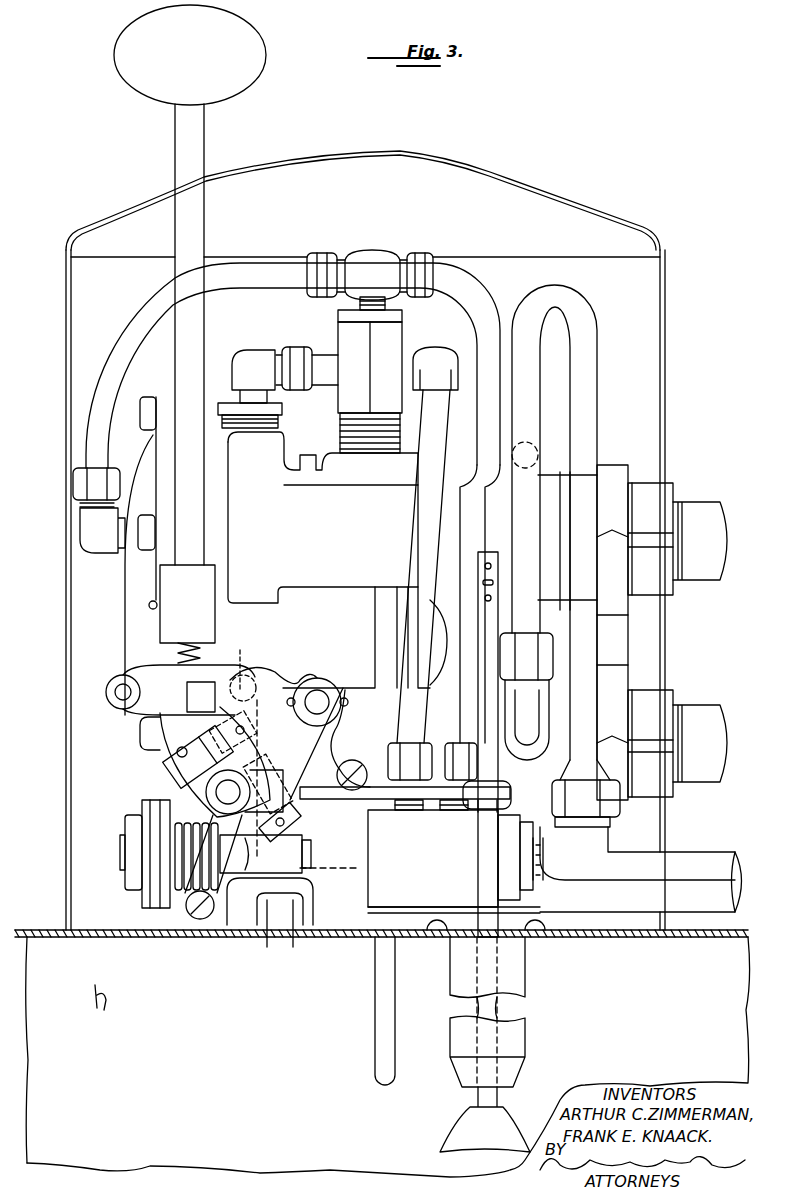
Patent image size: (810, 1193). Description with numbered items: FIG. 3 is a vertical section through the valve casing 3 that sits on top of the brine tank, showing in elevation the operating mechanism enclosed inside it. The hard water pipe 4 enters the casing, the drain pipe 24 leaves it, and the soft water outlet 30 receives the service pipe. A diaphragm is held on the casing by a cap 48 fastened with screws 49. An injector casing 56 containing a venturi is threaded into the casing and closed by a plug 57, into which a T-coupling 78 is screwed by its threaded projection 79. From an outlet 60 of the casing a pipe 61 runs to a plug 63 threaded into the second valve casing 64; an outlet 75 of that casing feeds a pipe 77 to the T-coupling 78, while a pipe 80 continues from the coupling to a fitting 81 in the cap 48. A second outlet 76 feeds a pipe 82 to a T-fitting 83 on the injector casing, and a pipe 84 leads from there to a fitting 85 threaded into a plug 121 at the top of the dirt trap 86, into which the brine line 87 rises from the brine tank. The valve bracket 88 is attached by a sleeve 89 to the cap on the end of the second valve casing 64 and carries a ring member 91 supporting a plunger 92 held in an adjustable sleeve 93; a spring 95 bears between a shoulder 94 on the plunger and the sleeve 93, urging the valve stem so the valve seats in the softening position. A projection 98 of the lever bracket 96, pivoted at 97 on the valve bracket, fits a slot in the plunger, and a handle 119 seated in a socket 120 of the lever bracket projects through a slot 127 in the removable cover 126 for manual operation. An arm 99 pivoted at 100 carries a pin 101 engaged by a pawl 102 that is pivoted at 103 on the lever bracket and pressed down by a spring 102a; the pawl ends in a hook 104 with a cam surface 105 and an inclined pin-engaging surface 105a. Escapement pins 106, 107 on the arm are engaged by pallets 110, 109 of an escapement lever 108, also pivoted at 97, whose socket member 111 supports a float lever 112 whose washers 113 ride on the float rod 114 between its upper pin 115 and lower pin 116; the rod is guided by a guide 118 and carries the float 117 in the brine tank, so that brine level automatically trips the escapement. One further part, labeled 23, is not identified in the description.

The valve casing 3 is at (666, 368).
The hard water pipe 4 is at (704, 698).
The bolt 23 is at (300, 945).
The drain pipe 24 is at (712, 862).
The outlet 30 is at (700, 508).
The cap 48 is at (125, 630).
The screws 49 is at (148, 425).
The injector casing 56 is at (352, 345).
The plug 57 is at (338, 316).
The outlet 60 is at (560, 755).
The pipe 61 is at (575, 422).
The plug 63 is at (525, 890).
The second valve casing 64 is at (437, 868).
The outlet 75 is at (454, 861).
The outlet 76 is at (405, 806).
The pipe 77 is at (462, 720).
The T-coupling 78 is at (373, 268).
The threaded projection 79 is at (388, 305).
The pipe 80 is at (125, 340).
The fitting 81 is at (85, 528).
The pipe 82 is at (418, 560).
The T-fitting 83 is at (438, 352).
The pipe 84 is at (320, 385).
The fitting 85 is at (252, 356).
The dirt trap 86 is at (257, 478).
The brine line 87 is at (372, 635).
The valve bracket 88 is at (342, 733).
The sleeve 89 is at (345, 878).
The ring member 91 is at (160, 898).
The plunger 92 is at (303, 858).
The sleeve 93 is at (135, 872).
The shoulder 94 is at (250, 925).
The spring 95 is at (198, 920).
The lever bracket 96 is at (165, 767).
The pivot 97 is at (226, 780).
The projection 98 is at (270, 901).
The arm 99 is at (300, 685).
The pivot 100 is at (320, 692).
The pin 101 is at (247, 675).
The pawl 102 is at (158, 697).
The spring 102a is at (175, 620).
The pivot 103 is at (106, 692).
The hook 104 is at (201, 698).
The cam surface 105 is at (248, 660).
The inclined cam surface 105a is at (199, 659).
The escapement pin 106 is at (272, 775).
The escapement pin 107 is at (250, 742).
The escapement lever 108 is at (195, 780).
The pallet 109 is at (140, 730).
The pallet 110 is at (298, 822).
The socket member 111 is at (345, 770).
The float lever 112 is at (428, 808).
The washers 113 is at (511, 795).
The float rod 114 is at (492, 770).
The upper pin 115 is at (497, 582).
The lower pin 116 is at (480, 806).
The float 117 is at (510, 1130).
The guide 118 is at (522, 1050).
The handle 119 is at (200, 165).
The socket 120 is at (187, 604).
The plug 121 is at (282, 418).
The removable cover 126 is at (648, 225).
The slot 127 is at (430, 158).